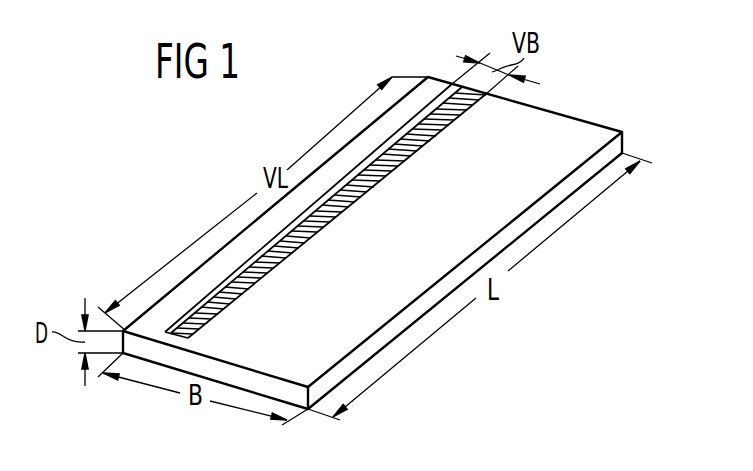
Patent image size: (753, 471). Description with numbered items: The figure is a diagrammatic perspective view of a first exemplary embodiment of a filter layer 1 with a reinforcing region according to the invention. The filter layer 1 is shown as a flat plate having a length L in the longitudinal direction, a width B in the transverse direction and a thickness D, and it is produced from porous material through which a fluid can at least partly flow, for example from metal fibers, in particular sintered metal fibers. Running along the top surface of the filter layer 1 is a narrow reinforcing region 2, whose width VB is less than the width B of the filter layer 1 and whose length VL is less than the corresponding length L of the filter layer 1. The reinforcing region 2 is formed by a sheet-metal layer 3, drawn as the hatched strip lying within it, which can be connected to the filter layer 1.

The filter layer 1 is at (567, 262).
The reinforcing region 2 is at (398, 152).
The sheet-metal layer 3 is at (247, 271).